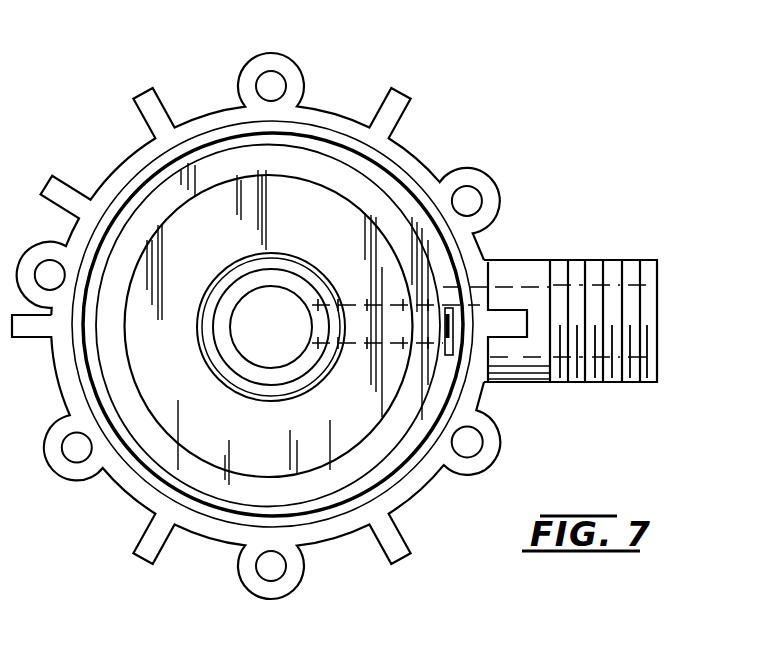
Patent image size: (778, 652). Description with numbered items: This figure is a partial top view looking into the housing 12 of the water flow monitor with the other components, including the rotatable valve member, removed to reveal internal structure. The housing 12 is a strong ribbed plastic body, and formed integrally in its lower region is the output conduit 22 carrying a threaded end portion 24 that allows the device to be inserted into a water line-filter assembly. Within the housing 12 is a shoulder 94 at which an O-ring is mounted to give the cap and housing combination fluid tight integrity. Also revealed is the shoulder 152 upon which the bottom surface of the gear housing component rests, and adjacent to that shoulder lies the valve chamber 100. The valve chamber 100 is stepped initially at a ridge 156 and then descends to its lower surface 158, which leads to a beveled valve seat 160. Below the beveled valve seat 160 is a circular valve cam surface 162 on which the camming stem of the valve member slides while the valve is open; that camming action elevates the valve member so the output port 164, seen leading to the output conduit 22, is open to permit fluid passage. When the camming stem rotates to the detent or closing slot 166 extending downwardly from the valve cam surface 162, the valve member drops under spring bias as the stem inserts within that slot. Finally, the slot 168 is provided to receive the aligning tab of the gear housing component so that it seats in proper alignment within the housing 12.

The housing 12 is at (422, 177).
The output conduit 22 is at (521, 270).
The threaded end portion 24 is at (612, 270).
The shoulder 94 is at (148, 172).
The valve chamber 100 is at (337, 225).
The shoulder 152 is at (383, 178).
The ridge 156 is at (343, 177).
The lower surface 158 is at (227, 200).
The beveled valve seat 160 is at (293, 388).
The circular valve cam surface 162 is at (231, 355).
The output port 164 is at (363, 305).
The closing slot 166 is at (312, 320).
The slot 168 is at (455, 323).